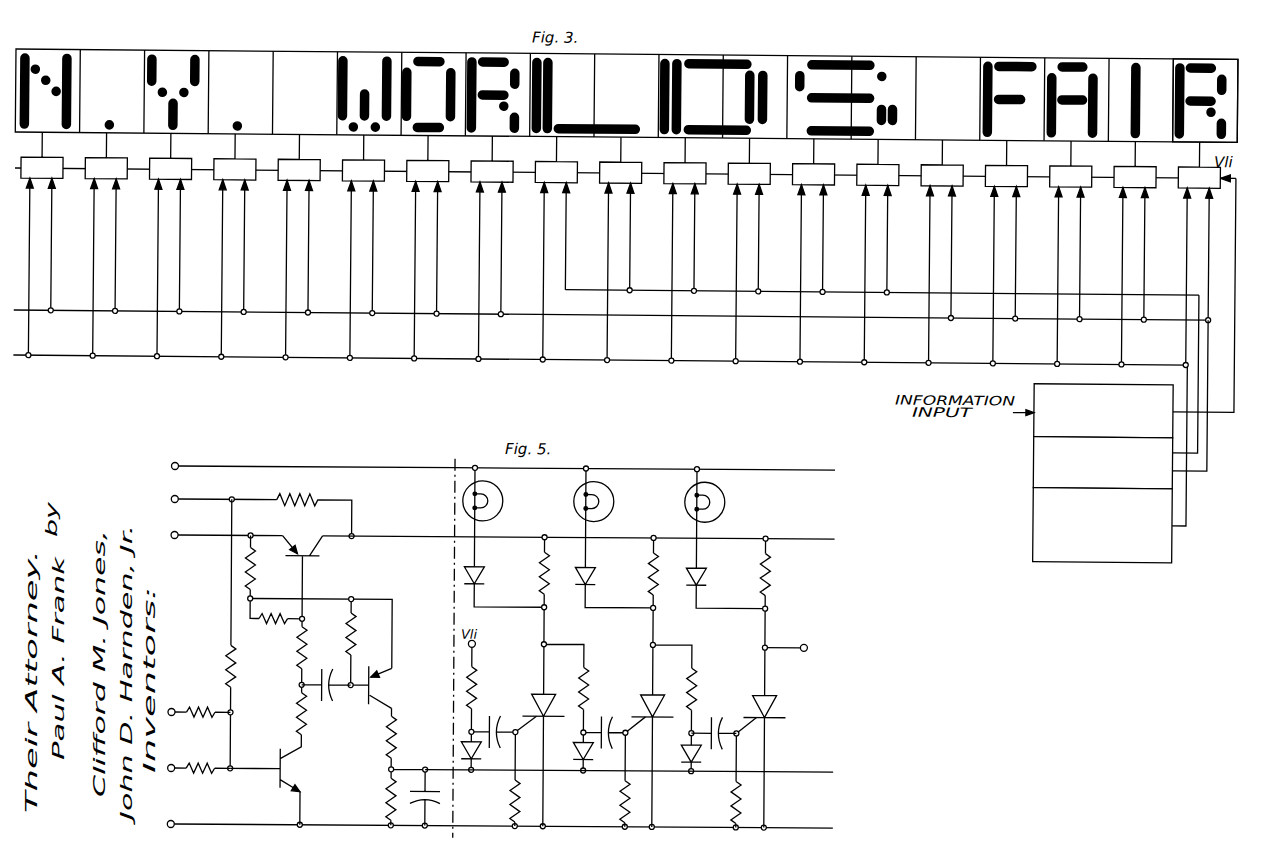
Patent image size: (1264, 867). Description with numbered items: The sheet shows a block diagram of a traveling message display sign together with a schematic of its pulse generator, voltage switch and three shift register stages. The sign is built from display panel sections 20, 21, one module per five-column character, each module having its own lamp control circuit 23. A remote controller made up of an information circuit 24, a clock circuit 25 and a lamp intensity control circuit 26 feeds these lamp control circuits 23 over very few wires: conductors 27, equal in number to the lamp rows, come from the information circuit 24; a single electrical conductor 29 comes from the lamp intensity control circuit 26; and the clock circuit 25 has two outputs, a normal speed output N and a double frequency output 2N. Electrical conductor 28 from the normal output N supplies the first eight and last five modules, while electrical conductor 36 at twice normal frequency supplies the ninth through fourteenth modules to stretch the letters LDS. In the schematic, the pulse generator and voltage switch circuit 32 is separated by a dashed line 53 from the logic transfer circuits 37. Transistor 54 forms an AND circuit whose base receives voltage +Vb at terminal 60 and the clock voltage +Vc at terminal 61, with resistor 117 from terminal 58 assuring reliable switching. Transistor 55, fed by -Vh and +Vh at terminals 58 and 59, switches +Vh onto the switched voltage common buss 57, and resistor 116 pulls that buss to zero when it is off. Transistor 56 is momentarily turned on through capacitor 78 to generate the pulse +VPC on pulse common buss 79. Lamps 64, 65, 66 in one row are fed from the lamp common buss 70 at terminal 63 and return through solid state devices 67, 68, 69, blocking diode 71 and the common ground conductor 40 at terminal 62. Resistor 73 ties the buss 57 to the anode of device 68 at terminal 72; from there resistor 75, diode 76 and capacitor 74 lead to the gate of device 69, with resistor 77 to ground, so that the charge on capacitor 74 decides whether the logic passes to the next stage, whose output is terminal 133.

In FIG. 3, the display panel section 20 is at (1154, 50).
In FIG. 3, the display panel section 21 is at (1211, 52).
In FIG. 3, the lamp control circuit 23 is at (59, 178).
In FIG. 3, the information circuit 24 is at (1037, 418).
In FIG. 3, the clock circuit 25 is at (1037, 458).
In FIG. 3, the lamp intensity control circuit 26 is at (1037, 505).
In FIG. 3, the conductors 27 is at (1238, 386).
In FIG. 3, the electrical conductor 28 is at (782, 311).
In FIG. 3, the electrical conductor 29 is at (72, 358).
In FIG. 3, the electrical conductor 36 is at (858, 284).
In FIG. 3, the double frequency clock output 2N is at (1181, 443).
In FIG. 3, the normal speed clock output N is at (1182, 464).
In FIG. 5, the pulse generator and voltage switch circuit 32 is at (355, 463).
In FIG. 5, the logic transfer circuits 37 is at (725, 452).
In FIG. 5, the common ground conductor 40 is at (219, 824).
In FIG. 5, the dashed line 53 is at (456, 460).
In FIG. 5, the transistor 54 is at (281, 753).
In FIG. 5, the transistor 55 is at (320, 553).
In FIG. 5, the transistor 56 is at (369, 703).
In FIG. 5, the switched voltage common buss 57 is at (392, 535).
In FIG. 5, the terminal 58 is at (171, 499).
In FIG. 5, the terminal 59 is at (177, 539).
In FIG. 5, the terminal 60 is at (193, 716).
In FIG. 5, the terminal 61 is at (196, 775).
In FIG. 5, the terminal 62 is at (169, 824).
In FIG. 5, the terminal 63 is at (171, 466).
In FIG. 5, the lamp 64 is at (504, 499).
In FIG. 5, the lamp 65 is at (615, 499).
In FIG. 5, the lamp 66 is at (726, 499).
In FIG. 5, the solid state controlled conducting device 67 is at (536, 693).
In FIG. 5, the solid state controlled conducting device 68 is at (647, 693).
In FIG. 5, the solid state controlled conducting device 69 is at (777, 703).
In FIG. 5, the lamp common buss 70 is at (799, 463).
In FIG. 5, the blocking diode 71 is at (596, 576).
In FIG. 5, the terminal 72 is at (652, 642).
In FIG. 5, the resistor 73 is at (659, 592).
In FIG. 5, the capacitor 74 is at (713, 716).
In FIG. 5, the resistor 75 is at (701, 670).
In FIG. 5, the diode 76 is at (686, 753).
In FIG. 5, the resistor 77 is at (731, 797).
In FIG. 5, the capacitor 78 is at (318, 702).
In FIG. 5, the pulse common buss 79 is at (787, 767).
In FIG. 5, the resistor 116 is at (309, 497).
In FIG. 5, the resistor 117 is at (227, 655).
In FIG. 5, the terminal 133 is at (808, 651).